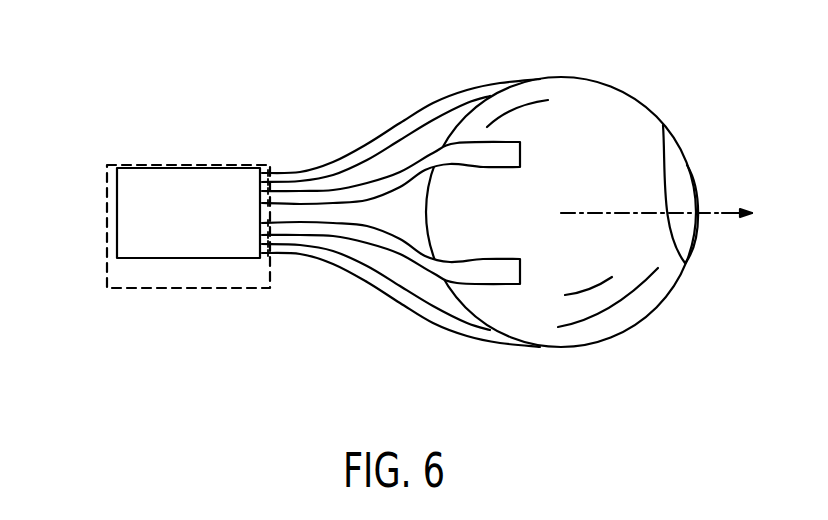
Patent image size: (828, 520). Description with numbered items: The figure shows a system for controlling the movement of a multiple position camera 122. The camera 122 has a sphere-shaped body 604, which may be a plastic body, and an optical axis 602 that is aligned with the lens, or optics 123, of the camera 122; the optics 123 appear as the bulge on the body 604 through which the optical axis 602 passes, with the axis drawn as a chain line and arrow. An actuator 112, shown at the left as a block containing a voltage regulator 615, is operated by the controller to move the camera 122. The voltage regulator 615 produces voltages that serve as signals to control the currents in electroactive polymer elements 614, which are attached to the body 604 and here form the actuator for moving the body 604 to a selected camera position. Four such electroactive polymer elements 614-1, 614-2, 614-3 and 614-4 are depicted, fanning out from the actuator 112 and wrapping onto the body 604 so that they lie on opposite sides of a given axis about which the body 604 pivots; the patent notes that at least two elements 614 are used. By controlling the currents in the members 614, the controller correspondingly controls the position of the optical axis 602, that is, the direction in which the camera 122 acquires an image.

The actuator 112 is at (188, 164).
The camera 122 is at (615, 337).
The optics 123 is at (664, 125).
The optical axis 602 is at (703, 213).
The sphere-shaped body 604 is at (670, 289).
The electroactive polymer elements 614 is at (380, 185).
The electroactive polymer element 614-1 is at (330, 163).
The electroactive polymer element 614-2 is at (463, 337).
The electroactive polymer element 614-3 is at (403, 178).
The electroactive polymer element 614-4 is at (312, 231).
The voltage regulator 615 is at (112, 212).